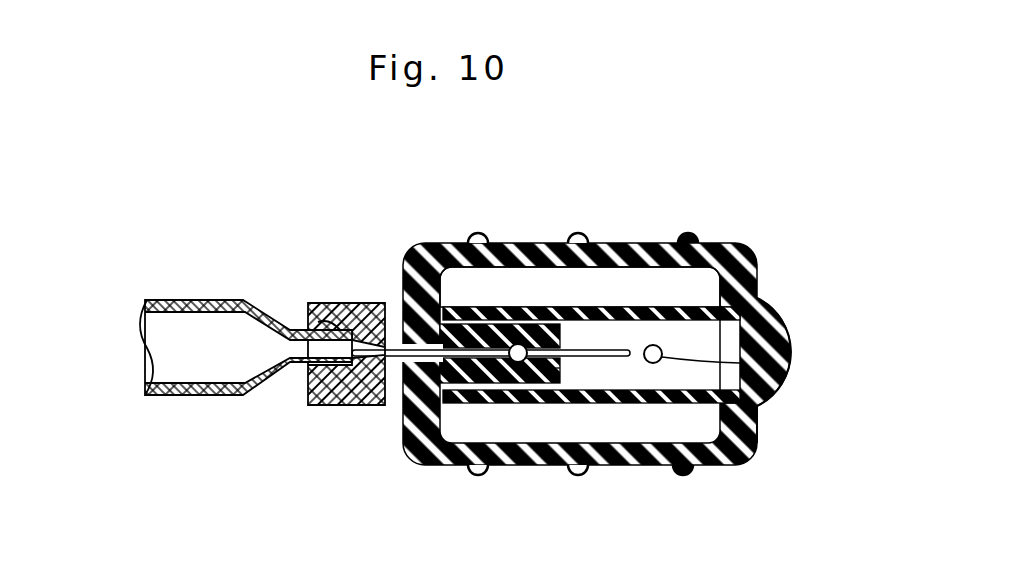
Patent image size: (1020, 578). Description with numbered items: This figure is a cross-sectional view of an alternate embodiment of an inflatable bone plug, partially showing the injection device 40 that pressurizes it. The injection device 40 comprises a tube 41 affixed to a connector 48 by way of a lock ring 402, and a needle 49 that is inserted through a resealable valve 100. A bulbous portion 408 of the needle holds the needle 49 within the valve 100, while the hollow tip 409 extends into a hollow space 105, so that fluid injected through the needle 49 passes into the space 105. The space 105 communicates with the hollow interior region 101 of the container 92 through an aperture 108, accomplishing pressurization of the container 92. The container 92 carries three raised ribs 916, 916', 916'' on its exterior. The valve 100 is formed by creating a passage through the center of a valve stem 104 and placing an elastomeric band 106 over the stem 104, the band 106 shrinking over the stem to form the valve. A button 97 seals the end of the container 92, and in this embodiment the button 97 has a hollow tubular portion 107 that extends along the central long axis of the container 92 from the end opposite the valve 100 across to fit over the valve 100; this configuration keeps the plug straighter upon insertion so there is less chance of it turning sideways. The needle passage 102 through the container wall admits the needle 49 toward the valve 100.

The injection device 40 is at (218, 411).
The tube 41 is at (178, 300).
The connector 48 is at (370, 302).
The needle 49 is at (577, 347).
The container 92 is at (757, 448).
The button 97 is at (777, 348).
The resealable valve 100 is at (566, 375).
The hollow interior region 101 is at (674, 288).
The needle passage 102 is at (410, 417).
The valve stem 104 is at (493, 381).
The hollow space 105 is at (597, 383).
The elastomeric band 106 is at (548, 368).
The hollow tubular portion 107 is at (603, 310).
The aperture 108 is at (782, 390).
The lock ring 402 is at (333, 333).
The bulbous portion 408 is at (519, 344).
The hollow tip 409 is at (648, 346).
The raised rib 916 is at (438, 397).
The raised rib 916' is at (618, 397).
The raised rib 916'' is at (746, 397).